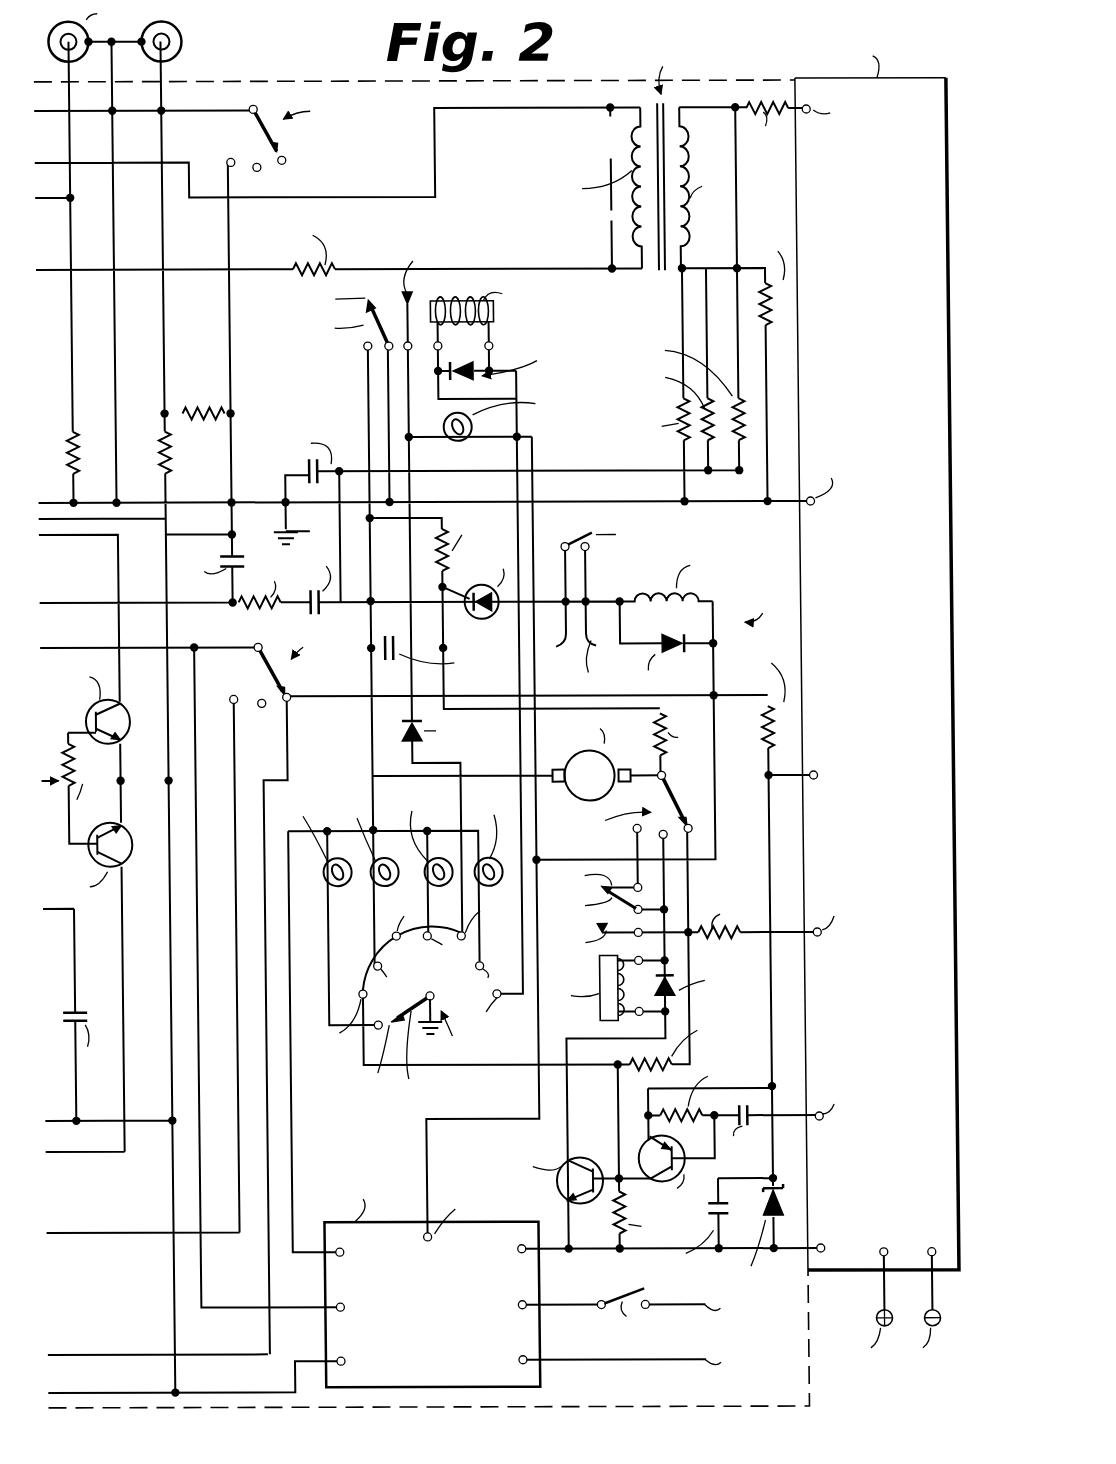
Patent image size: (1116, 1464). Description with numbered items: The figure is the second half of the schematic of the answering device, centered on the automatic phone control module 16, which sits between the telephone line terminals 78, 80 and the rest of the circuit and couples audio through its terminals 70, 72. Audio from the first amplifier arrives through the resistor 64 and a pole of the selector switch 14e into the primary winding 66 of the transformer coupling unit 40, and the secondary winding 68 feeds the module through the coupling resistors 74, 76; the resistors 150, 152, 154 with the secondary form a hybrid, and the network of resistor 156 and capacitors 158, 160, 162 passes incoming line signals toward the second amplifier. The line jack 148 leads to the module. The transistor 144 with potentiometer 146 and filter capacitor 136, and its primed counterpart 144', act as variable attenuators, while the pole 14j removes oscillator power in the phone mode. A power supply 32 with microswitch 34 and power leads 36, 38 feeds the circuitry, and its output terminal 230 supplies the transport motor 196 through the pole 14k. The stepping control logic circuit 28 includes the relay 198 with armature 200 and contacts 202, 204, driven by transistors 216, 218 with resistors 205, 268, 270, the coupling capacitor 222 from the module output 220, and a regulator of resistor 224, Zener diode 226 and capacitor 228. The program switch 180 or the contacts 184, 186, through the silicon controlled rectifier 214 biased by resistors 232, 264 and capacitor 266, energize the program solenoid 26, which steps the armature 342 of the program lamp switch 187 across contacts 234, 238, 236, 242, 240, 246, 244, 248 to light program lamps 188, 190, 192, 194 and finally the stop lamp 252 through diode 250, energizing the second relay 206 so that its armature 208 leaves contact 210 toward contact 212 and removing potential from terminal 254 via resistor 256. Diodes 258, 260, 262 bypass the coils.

The automatic phone control module 16 is at (877, 658).
The telephone line terminals 148 is at (115, 34).
The mode switch section 14e is at (280, 144).
The resistor 64 is at (310, 247).
The normally open contact 212 is at (417, 272).
The armature 208 is at (343, 318).
The normally closed contact 210 is at (351, 332).
The second relay 206 is at (486, 315).
The diode 258 is at (513, 363).
The stop indicator lamp 252 is at (510, 416).
The transformer coupling unit 40 is at (660, 68).
The primary winding 66 is at (598, 187).
The secondary winding 68 is at (701, 187).
The coupling resistor 76 is at (767, 127).
The terminal 70 is at (830, 113).
The resistor 154 is at (763, 277).
The resistor 152 is at (687, 389).
The resistor 150 is at (670, 404).
The coupling resistor 74 is at (661, 420).
The terminal 72 is at (818, 484).
The capacitor 160 is at (302, 457).
The capacitor 158 is at (207, 567).
The resistor 156 is at (264, 584).
The capacitor 162 is at (317, 578).
The pole of the switch 14j is at (272, 678).
The transistor 144 is at (89, 705).
The potentiometer 146 is at (89, 772).
The transistor 144' is at (92, 862).
The capacitor 136 is at (91, 1042).
The program lamp 188 is at (313, 840).
The program lamp 190 is at (367, 840).
The program lamp 192 is at (425, 838).
The program lamp 194 is at (490, 838).
The contact 240 is at (412, 958).
The contact 242 is at (400, 917).
The contact 246 is at (490, 923).
The second contact 236 is at (393, 983).
The contact 244 is at (473, 985).
The contact 248 is at (505, 1012).
The third contact 238 is at (344, 1025).
The first contact 234 is at (390, 1046).
The armature 342 is at (428, 1056).
The program lamp switch 187 is at (454, 1031).
The transport motor 196 is at (591, 759).
The pole of the switch 14k is at (635, 814).
The resistor 232 is at (681, 731).
The program switch 180 is at (609, 537).
The contact 186 is at (558, 667).
The contact 184 is at (602, 666).
The program solenoid 26 is at (668, 577).
The stepping control logic circuit 28 is at (752, 605).
The resistor 224 is at (757, 703).
The diode 260 is at (670, 663).
The resistor 264 is at (466, 543).
The silicon controlled rectifier 214 is at (474, 584).
The capacitor 266 is at (440, 656).
The diode 250 is at (438, 733).
The normally closed contact 202 is at (591, 882).
The armature 200 is at (591, 905).
The normally open contact 204 is at (591, 940).
The relay 198 is at (592, 987).
The resistor 256 is at (721, 915).
The terminal 254 is at (830, 915).
The diode 262 is at (700, 982).
The resistor 205 is at (684, 1043).
The resistor 268 is at (699, 1088).
The output 220 is at (838, 1100).
The capacitor 222 is at (739, 1134).
The transistor 216 is at (553, 1174).
The transistor 218 is at (662, 1175).
The resistor 270 is at (647, 1217).
The filter capacitor 228 is at (694, 1243).
The Zener diode 226 is at (769, 1237).
The output terminal 230 is at (453, 1214).
The power supply 32 is at (432, 1284).
The microswitch 34 is at (623, 1315).
The power lead 38 is at (725, 1311).
The power lead 36 is at (726, 1363).
The terminal 78 is at (868, 1309).
The terminal 80 is at (919, 1309).